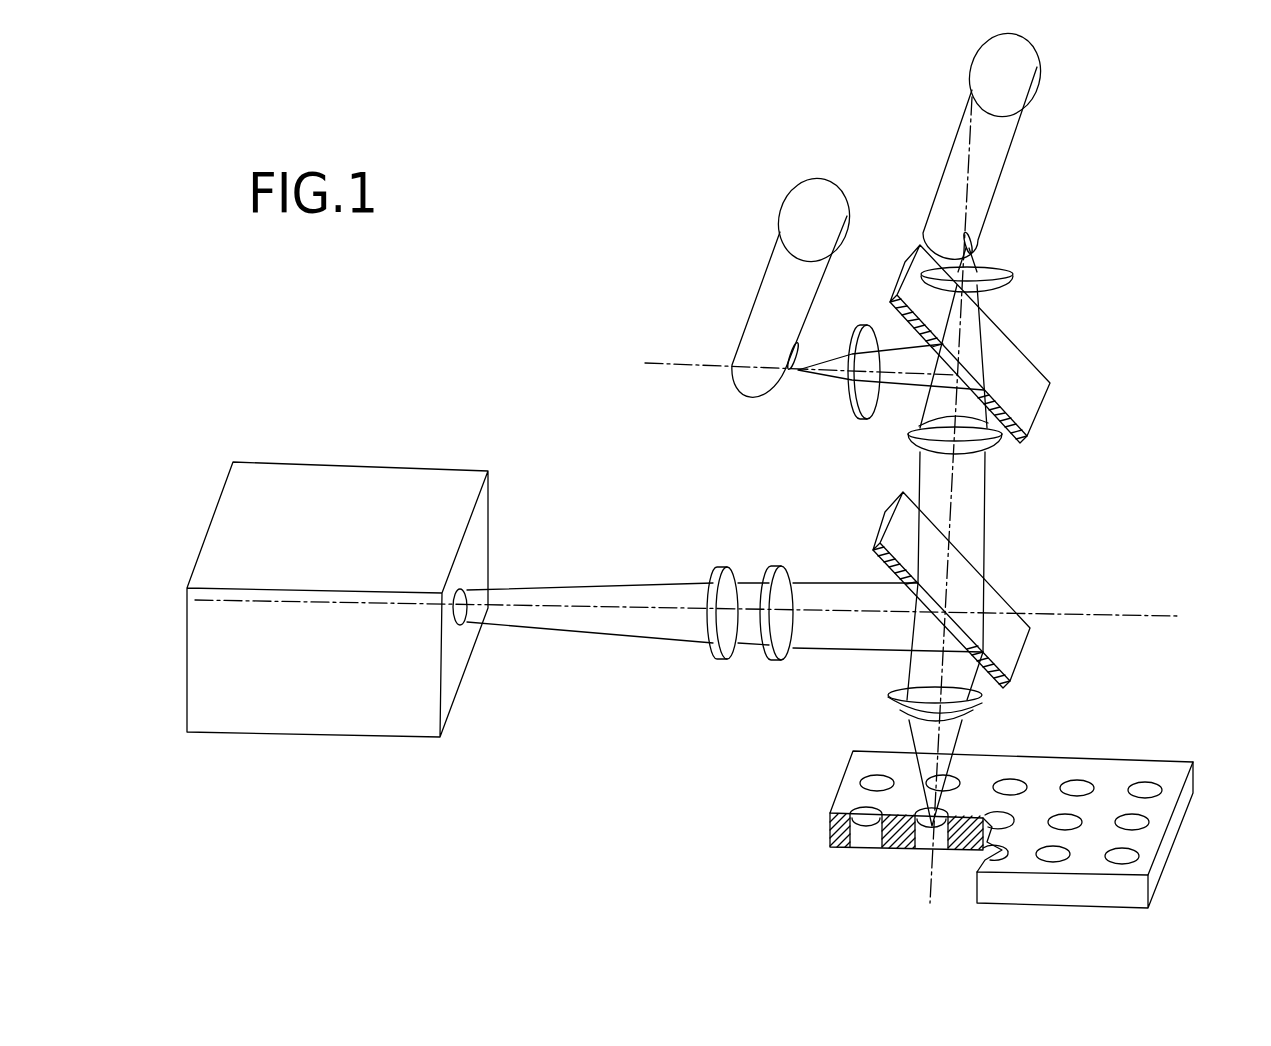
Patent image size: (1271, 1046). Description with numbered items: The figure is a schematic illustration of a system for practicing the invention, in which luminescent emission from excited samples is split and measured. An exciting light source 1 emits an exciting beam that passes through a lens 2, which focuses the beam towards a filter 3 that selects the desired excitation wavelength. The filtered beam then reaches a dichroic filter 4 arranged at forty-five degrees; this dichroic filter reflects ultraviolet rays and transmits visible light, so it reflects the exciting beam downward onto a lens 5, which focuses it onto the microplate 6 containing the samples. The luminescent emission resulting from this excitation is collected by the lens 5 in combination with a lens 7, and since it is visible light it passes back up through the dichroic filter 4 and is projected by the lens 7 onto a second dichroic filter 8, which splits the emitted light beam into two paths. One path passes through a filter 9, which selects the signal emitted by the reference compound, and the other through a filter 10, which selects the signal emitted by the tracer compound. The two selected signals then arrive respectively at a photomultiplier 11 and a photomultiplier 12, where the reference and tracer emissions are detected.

The exciting light source 1 is at (340, 482).
The lens 2 is at (733, 569).
The filter 3 is at (779, 567).
The dichroic filter 4 is at (993, 598).
The lens 5 is at (980, 707).
The microplate 6 is at (1173, 845).
The lens 7 is at (908, 443).
The dichroic filter 8 is at (1027, 382).
The filter 9 is at (863, 323).
The filter 10 is at (1013, 283).
The photomultiplier 11 is at (768, 305).
The photomultiplier 12 is at (990, 165).